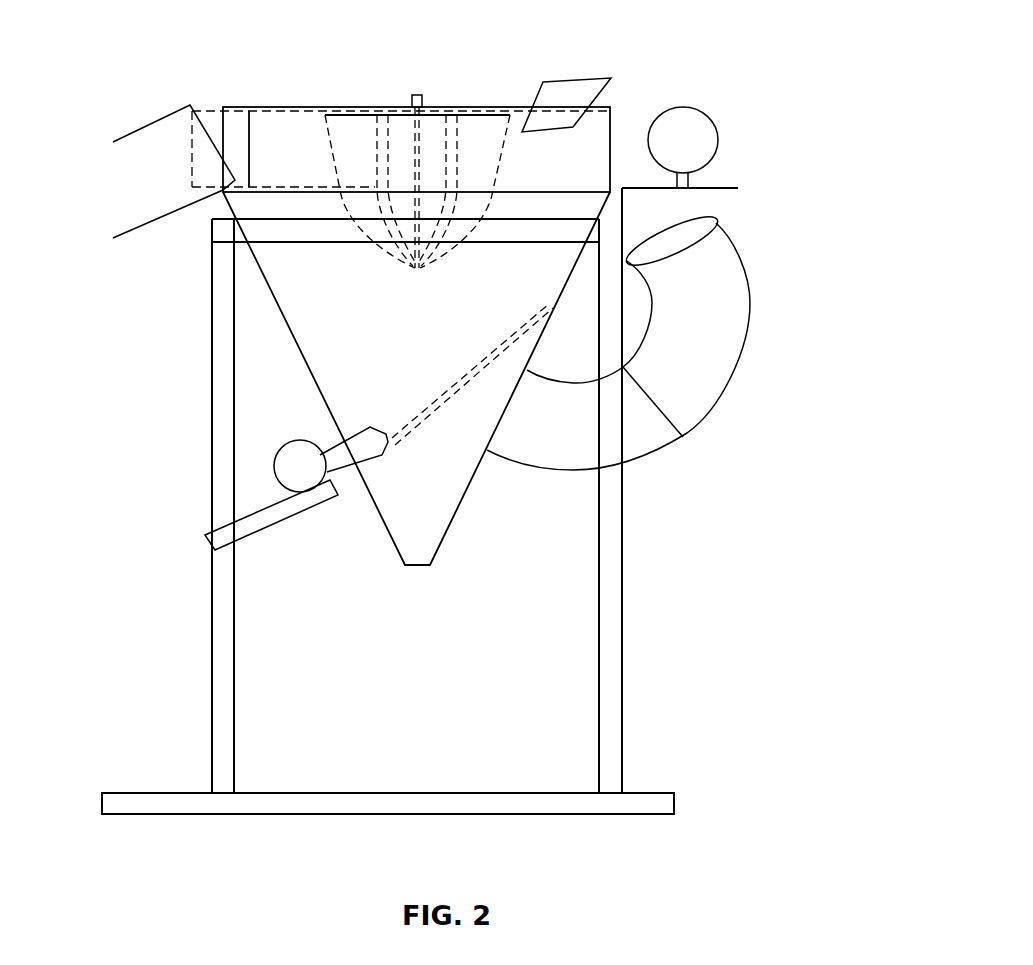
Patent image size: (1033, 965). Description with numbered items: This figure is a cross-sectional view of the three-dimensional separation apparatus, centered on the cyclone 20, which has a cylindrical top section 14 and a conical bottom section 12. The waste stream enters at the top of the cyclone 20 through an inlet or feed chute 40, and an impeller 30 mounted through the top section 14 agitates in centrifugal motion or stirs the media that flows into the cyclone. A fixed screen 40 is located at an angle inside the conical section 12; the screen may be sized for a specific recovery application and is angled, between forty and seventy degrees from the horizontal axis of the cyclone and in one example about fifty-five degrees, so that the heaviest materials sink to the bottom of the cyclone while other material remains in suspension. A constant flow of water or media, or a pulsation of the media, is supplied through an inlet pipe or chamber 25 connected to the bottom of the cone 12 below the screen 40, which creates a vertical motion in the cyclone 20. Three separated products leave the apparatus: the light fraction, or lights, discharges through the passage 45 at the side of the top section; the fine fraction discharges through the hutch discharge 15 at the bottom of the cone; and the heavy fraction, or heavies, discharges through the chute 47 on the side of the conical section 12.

The conical bottom section 12 is at (577, 258).
The cylindrical top section 14 is at (597, 165).
The hutch discharge 15 is at (440, 543).
The cyclone 20 is at (600, 120).
The inlet pipe or chamber 25 is at (723, 330).
The impeller 30 is at (414, 123).
The fixed screen 40 is at (561, 91).
The passage 45 is at (163, 142).
The chute 47 is at (283, 458).